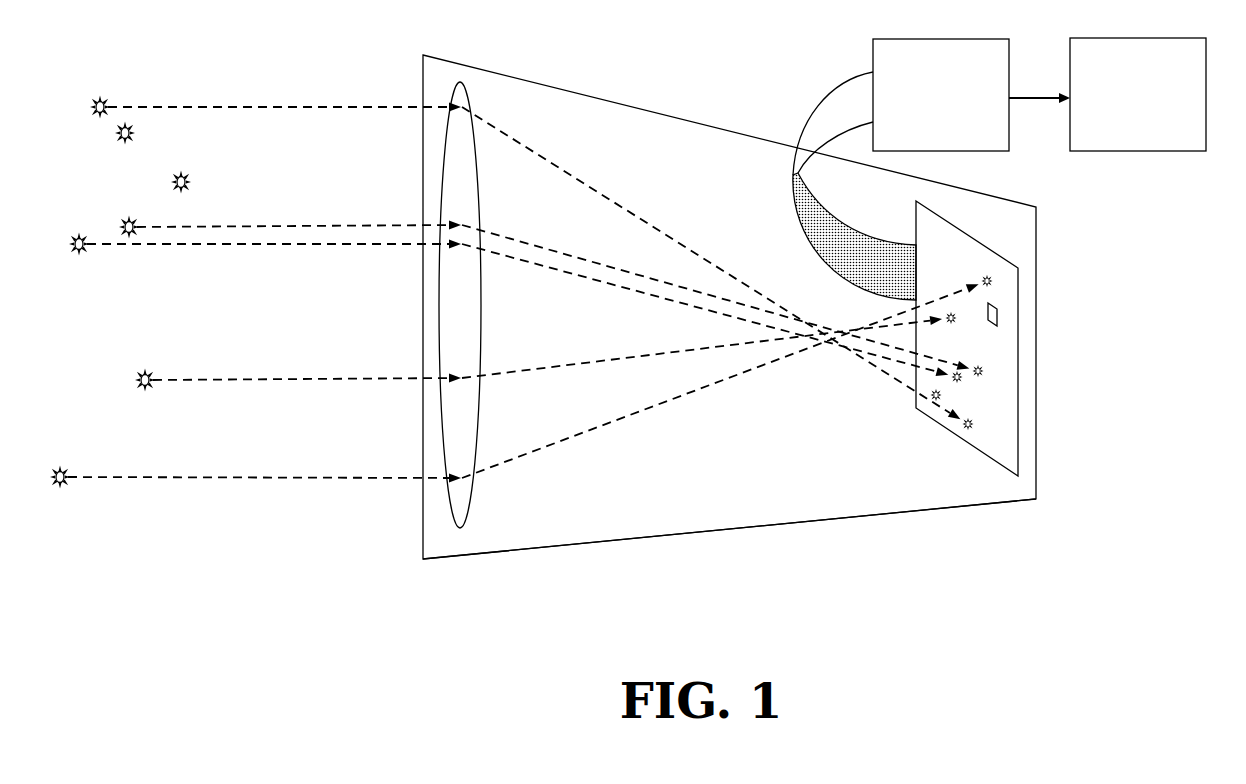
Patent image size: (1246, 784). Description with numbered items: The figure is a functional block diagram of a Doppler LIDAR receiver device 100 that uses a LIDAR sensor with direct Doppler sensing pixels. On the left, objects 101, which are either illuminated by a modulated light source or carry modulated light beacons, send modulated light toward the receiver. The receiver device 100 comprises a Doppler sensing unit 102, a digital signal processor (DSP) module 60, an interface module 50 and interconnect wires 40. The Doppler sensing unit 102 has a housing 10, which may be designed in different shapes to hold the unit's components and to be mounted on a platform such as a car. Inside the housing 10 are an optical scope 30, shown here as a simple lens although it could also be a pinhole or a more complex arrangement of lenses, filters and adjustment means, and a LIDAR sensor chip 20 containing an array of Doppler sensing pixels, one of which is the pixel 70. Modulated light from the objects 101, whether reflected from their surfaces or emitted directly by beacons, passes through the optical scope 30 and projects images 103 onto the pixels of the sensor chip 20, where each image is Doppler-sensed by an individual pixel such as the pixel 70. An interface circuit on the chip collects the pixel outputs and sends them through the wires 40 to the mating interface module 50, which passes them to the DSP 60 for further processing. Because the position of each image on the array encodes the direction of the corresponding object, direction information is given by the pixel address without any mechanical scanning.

The housing 10 is at (1036, 483).
The LIDAR sensor chip 20 is at (1018, 405).
The optical scope 30 is at (470, 102).
The interconnect wires 40 is at (808, 128).
The interface module 50 is at (873, 63).
The digital signal processor (DSP) module 60 is at (1118, 151).
The pixel 70 is at (997, 315).
The LIDAR receiver device 100 is at (1177, 541).
The objects 101 is at (173, 88).
The Doppler sensing unit 102 is at (827, 498).
The images 103 is at (943, 410).